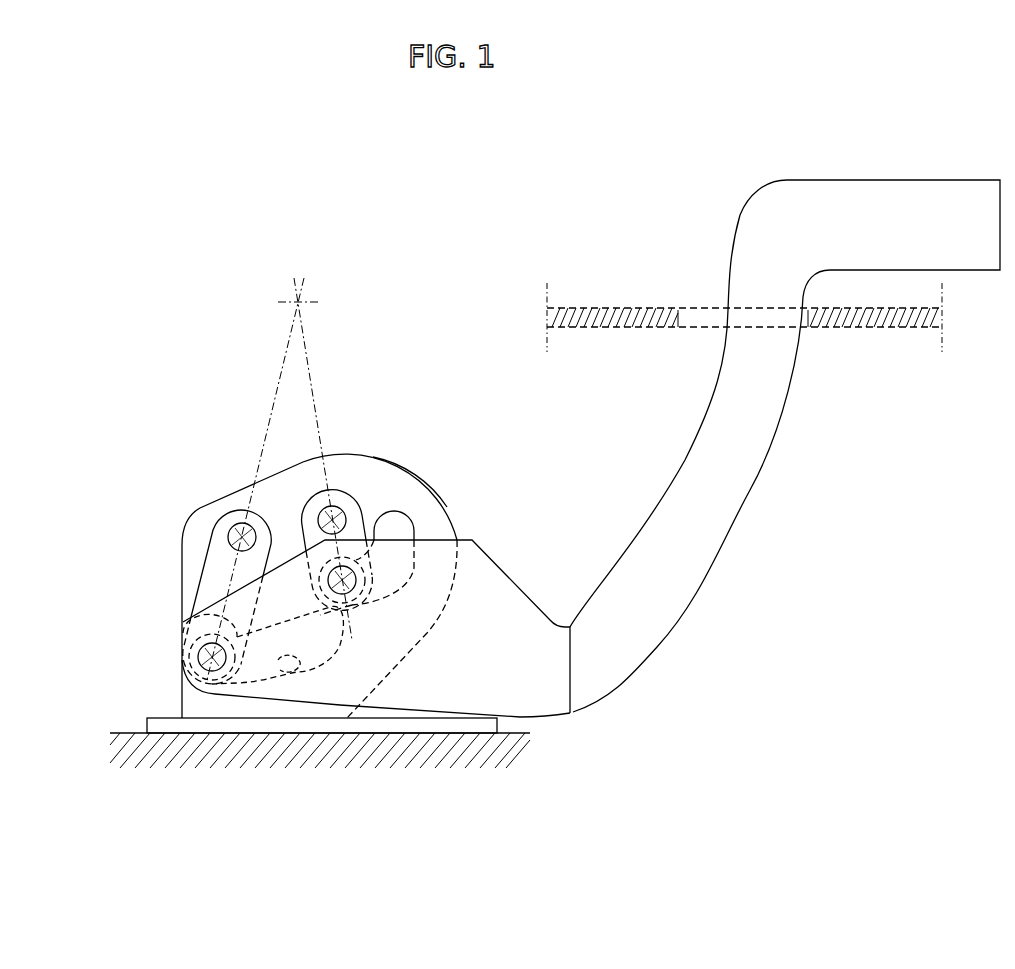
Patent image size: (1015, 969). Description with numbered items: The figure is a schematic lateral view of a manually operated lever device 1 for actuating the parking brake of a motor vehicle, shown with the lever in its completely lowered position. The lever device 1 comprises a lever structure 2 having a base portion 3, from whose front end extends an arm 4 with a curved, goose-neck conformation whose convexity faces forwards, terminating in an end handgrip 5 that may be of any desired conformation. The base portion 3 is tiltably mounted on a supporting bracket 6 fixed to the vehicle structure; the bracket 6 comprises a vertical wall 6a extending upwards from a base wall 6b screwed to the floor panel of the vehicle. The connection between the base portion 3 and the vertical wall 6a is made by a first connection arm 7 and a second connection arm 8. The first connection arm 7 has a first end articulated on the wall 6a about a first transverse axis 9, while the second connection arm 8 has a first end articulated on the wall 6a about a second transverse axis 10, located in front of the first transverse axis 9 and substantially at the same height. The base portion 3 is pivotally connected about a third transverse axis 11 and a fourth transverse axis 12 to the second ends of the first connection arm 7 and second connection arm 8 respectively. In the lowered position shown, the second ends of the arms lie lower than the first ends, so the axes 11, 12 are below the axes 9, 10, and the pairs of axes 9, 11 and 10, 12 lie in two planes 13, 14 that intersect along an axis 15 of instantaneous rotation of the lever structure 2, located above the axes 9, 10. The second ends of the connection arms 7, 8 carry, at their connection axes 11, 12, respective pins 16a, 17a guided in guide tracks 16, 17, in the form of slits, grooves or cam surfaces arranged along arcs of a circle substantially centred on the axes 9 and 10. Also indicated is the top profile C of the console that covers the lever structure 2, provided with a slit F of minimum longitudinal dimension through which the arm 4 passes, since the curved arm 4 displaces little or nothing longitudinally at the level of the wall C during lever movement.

The lever device 1 is at (100, 207).
The lever structure 2 is at (659, 648).
The base portion 3 is at (510, 598).
The arm 4 is at (737, 497).
The handgrip 5 is at (815, 187).
The supporting bracket 6 is at (381, 460).
The vertical wall 6a is at (407, 483).
The base wall 6b is at (160, 722).
The first connection arm 7 is at (197, 580).
The second connection arm 8 is at (352, 488).
The first transverse axis 9 is at (234, 525).
The second transverse axis 10 is at (324, 510).
The third transverse axis 11 is at (185, 665).
The fourth transverse axis 12 is at (355, 588).
The plane 13 is at (277, 390).
The plane 14 is at (312, 368).
The axis of instantaneous rotation 15 is at (298, 302).
The guide track 16 is at (293, 645).
The pin 16a is at (212, 640).
The guide track 17 is at (395, 520).
The pin 17a is at (345, 600).
The top profile of console C is at (608, 305).
The slit F is at (683, 322).